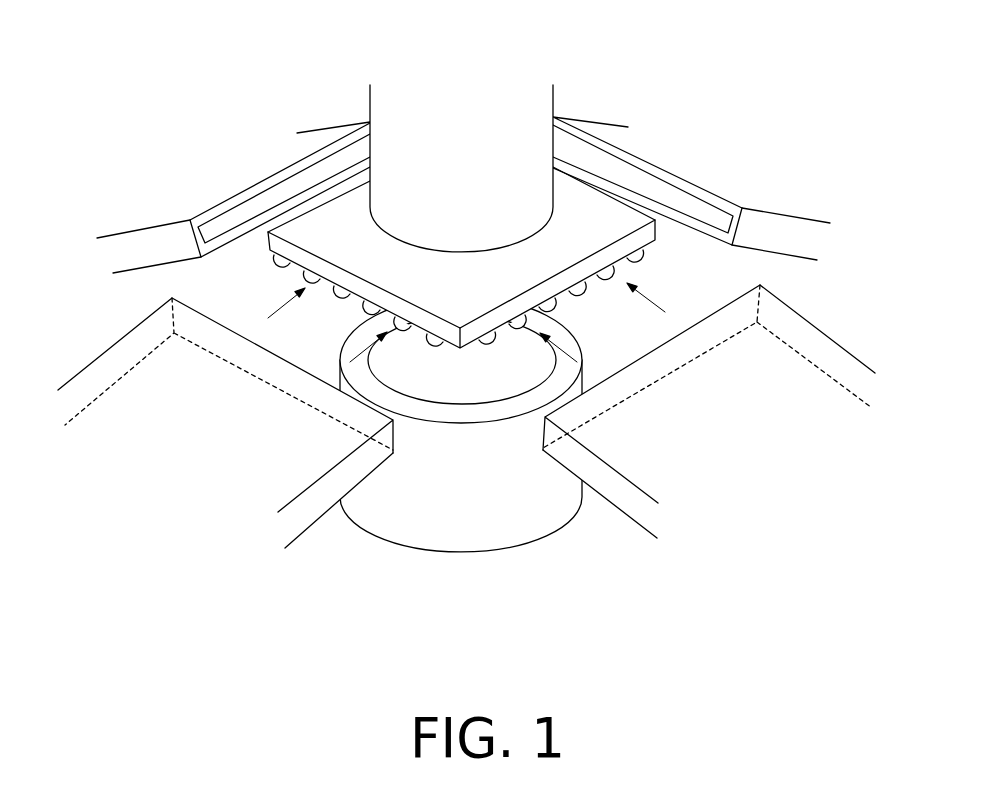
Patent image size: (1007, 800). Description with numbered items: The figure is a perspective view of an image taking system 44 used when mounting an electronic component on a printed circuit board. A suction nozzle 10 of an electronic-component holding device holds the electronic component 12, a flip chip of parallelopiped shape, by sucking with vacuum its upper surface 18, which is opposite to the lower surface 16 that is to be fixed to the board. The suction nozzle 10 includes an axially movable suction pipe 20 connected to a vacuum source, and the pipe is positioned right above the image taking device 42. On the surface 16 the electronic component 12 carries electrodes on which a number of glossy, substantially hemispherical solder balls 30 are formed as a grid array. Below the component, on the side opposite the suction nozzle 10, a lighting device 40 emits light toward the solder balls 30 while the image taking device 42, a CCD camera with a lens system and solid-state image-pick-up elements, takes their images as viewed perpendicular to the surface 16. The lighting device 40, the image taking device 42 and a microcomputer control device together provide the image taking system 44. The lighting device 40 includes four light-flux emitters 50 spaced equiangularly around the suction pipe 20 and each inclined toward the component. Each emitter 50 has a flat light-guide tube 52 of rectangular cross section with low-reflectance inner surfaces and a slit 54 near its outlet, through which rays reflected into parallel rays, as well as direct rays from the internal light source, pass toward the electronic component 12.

The suction nozzle 10 is at (578, 66).
The electronic component 12 is at (647, 233).
The surface 16 is at (612, 270).
The surface 18 is at (338, 238).
The suction pipe 20 is at (523, 112).
The solder balls 30 is at (377, 303).
The lighting device 40 is at (128, 310).
The image taking device 42 is at (473, 523).
The image taking system 44 is at (447, 582).
The light-flux emitters 50 is at (138, 281).
The light-guide tube 52 is at (313, 502).
The slit 54 is at (270, 200).